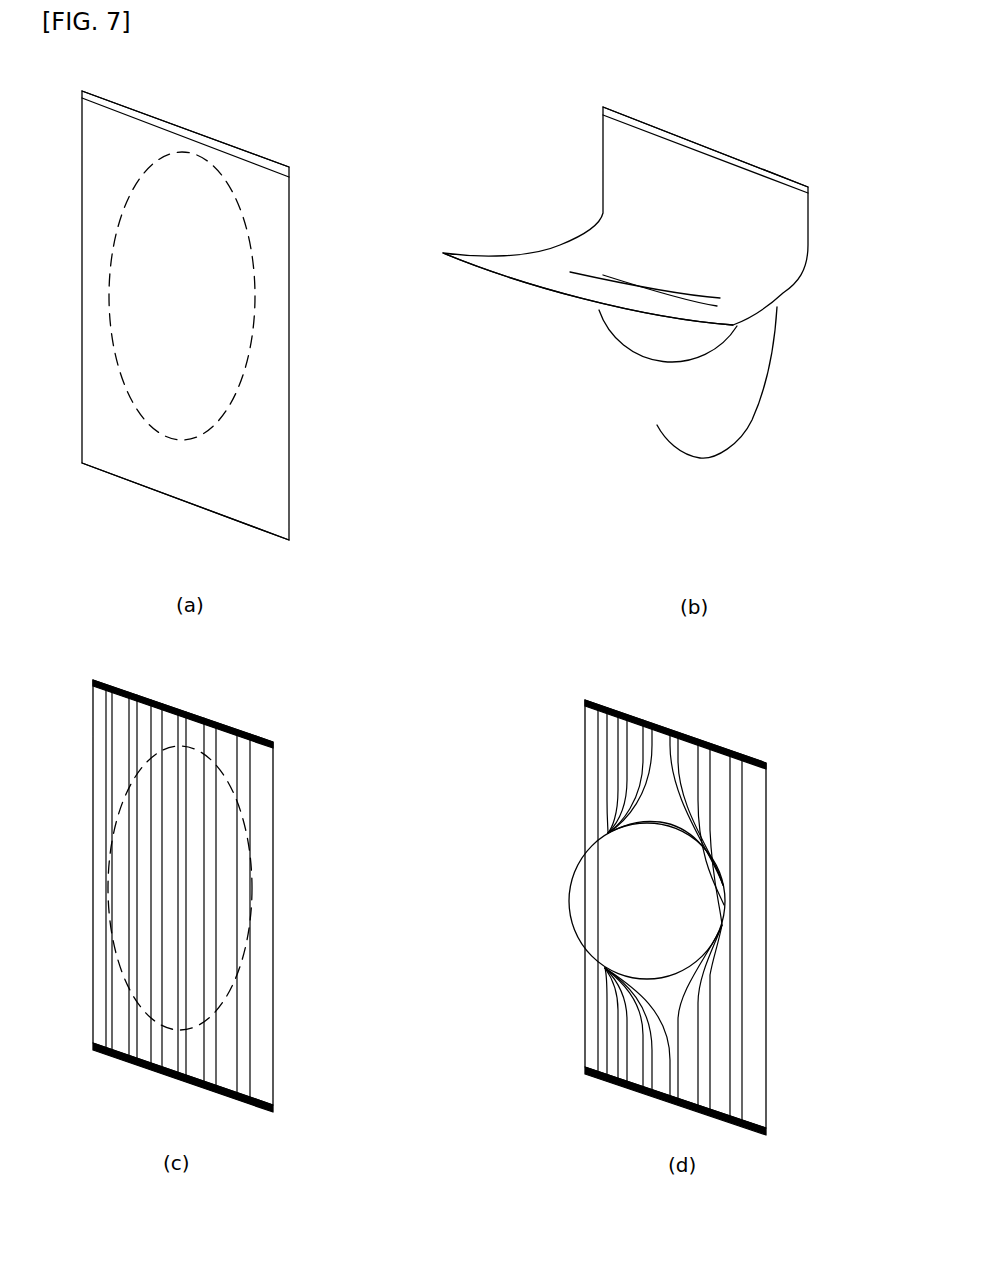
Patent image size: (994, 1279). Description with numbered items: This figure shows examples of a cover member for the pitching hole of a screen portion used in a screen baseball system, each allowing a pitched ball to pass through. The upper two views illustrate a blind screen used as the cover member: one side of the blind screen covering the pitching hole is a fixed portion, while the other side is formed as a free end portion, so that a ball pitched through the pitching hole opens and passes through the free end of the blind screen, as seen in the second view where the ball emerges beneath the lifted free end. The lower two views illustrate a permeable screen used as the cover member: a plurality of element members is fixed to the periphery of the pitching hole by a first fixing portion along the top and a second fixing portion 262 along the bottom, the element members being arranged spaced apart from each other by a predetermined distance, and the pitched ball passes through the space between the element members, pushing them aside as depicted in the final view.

The second fixing portion 262 is at (275, 1104).